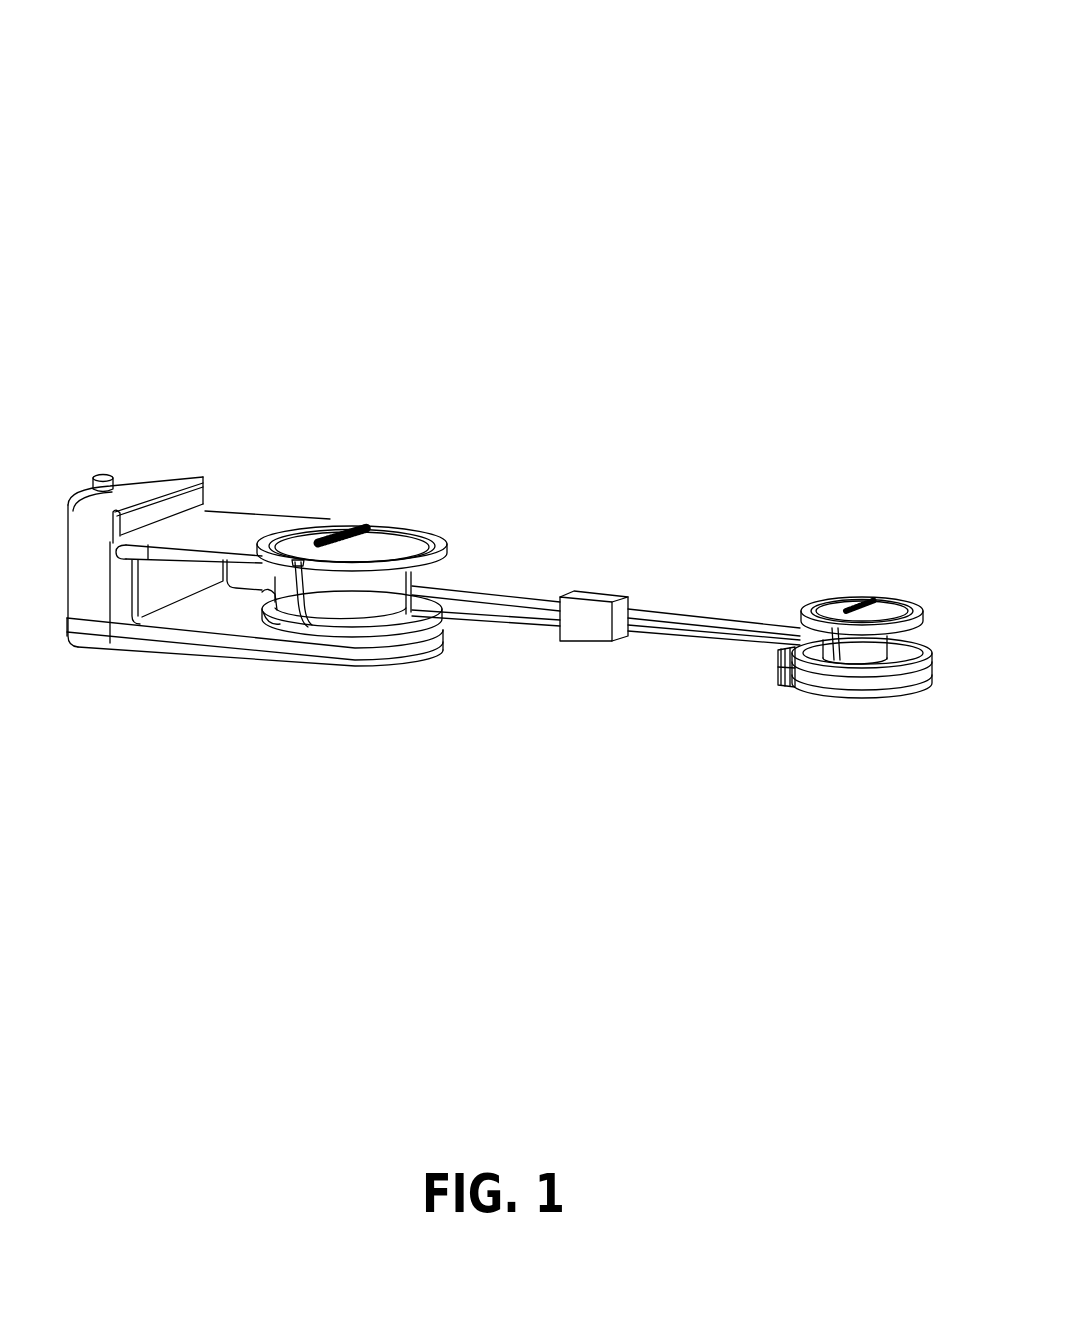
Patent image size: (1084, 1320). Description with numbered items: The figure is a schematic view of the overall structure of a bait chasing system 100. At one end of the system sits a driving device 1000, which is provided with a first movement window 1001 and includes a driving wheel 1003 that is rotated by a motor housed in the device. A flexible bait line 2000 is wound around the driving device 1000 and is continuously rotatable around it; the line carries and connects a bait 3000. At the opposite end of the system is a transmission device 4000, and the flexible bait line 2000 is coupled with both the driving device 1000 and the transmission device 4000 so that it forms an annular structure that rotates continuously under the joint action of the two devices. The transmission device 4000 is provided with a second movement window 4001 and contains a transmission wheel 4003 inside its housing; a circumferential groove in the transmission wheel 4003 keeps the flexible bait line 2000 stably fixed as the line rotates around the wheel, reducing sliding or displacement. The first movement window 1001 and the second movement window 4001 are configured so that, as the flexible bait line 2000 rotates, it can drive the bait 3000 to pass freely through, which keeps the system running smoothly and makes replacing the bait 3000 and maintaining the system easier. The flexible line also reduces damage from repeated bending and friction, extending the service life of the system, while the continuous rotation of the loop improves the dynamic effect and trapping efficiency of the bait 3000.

The bait chasing system 100 is at (226, 183).
The driving device 1000 is at (284, 470).
The first movement window 1001 is at (245, 585).
The driving wheel 1003 is at (357, 597).
The flexible bait line 2000 is at (501, 626).
The bait 3000 is at (592, 613).
The transmission device 4000 is at (838, 560).
The second movement window 4001 is at (893, 643).
The transmission wheel 4003 is at (847, 663).